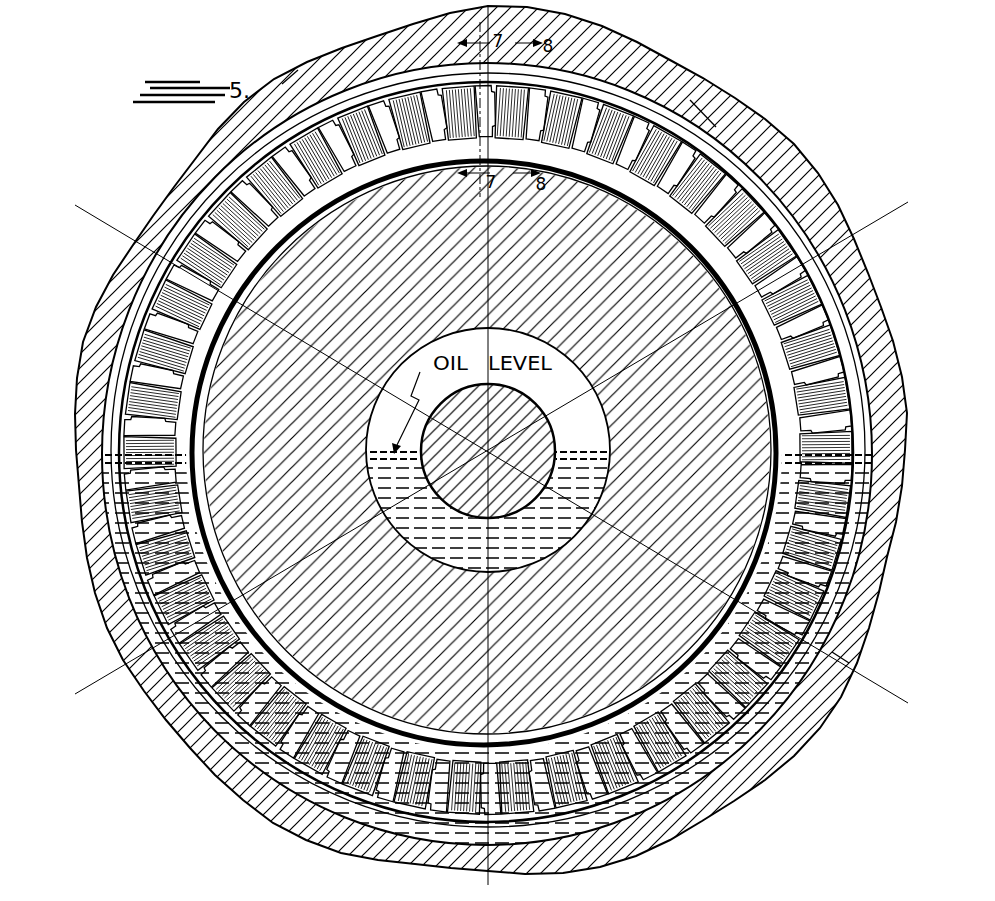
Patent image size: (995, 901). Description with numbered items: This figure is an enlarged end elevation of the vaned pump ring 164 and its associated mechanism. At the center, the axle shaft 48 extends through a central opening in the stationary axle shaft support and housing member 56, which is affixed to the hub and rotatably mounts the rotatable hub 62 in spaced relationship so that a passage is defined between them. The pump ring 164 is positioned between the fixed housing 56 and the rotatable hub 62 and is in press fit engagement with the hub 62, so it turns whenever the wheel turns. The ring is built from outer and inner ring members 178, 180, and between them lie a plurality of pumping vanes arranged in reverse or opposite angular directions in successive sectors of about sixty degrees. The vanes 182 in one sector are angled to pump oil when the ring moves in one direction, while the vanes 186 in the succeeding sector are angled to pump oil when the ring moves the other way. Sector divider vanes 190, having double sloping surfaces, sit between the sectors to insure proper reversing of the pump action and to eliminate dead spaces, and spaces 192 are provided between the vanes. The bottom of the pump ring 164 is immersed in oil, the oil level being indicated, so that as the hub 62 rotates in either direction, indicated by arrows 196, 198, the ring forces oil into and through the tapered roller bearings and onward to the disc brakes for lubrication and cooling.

The axle shaft 48 is at (533, 415).
The axle shaft support and housing member 56 is at (673, 243).
The rotatable hub 62 is at (688, 80).
The vaned pump ring 164 is at (449, 443).
The outer ring member 178 is at (573, 73).
The inner ring member 180 is at (627, 76).
The vanes 182 is at (407, 107).
The vanes 186 is at (140, 390).
The sector divider vanes 190 is at (793, 273).
The spaces 192 is at (840, 658).
The arrow 196 is at (291, 84).
The arrow 198 is at (693, 110).